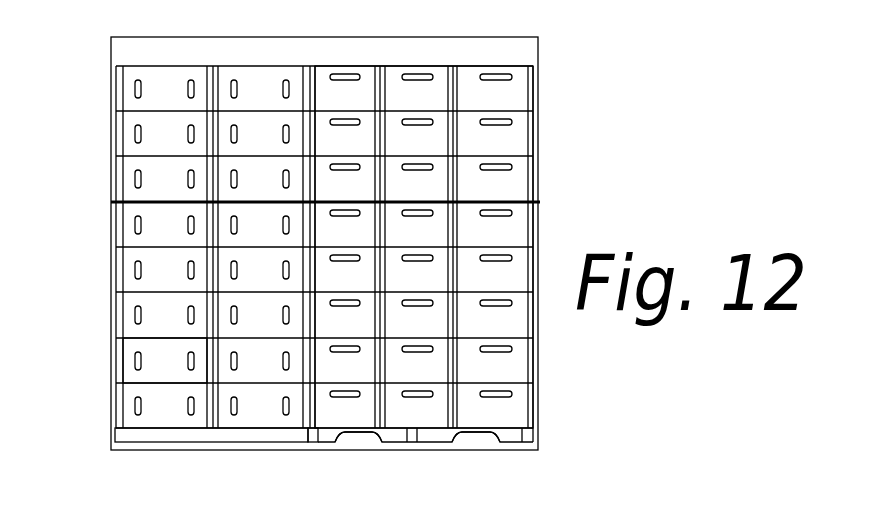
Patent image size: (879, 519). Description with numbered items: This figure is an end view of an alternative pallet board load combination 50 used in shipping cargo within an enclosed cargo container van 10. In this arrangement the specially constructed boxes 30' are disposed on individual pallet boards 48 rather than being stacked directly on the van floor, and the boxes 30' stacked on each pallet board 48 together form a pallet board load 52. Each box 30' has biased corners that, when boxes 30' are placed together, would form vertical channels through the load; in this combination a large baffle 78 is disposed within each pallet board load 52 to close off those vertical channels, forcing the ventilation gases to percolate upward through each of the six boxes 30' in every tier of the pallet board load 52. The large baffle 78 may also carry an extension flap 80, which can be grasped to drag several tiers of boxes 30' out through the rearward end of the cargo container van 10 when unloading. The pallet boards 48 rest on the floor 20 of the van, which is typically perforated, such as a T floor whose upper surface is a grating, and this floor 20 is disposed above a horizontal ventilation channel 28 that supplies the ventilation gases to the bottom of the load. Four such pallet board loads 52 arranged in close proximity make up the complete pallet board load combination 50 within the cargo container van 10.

The cargo container van 10 is at (533, 398).
The box 30' is at (462, 247).
The pallet board load 52 is at (160, 140).
The extension flap 80 is at (112, 202).
The large baffle 78 is at (165, 203).
The pallet board load combination 50 is at (148, 372).
The pallet board 48 is at (233, 435).
The floor 20 is at (393, 440).
The horizontal ventilation channel 28 is at (473, 440).